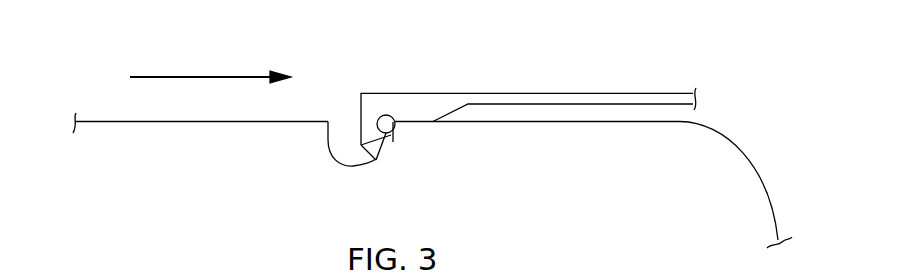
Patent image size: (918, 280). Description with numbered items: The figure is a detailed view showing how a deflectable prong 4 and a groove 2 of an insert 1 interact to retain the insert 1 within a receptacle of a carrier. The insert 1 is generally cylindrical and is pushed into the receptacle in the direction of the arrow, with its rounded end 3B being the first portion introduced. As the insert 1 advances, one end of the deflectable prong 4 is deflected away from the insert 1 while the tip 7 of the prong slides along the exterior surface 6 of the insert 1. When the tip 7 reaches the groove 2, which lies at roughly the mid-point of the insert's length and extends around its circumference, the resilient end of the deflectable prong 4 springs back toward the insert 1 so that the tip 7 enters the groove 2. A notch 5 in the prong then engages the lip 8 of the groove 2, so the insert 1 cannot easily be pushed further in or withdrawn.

The insert 1 is at (728, 132).
The groove 2 is at (341, 132).
The rounded end 3B is at (760, 170).
The deflectable prong 4 is at (445, 93).
The notch 5 is at (394, 121).
The exterior surface 6 is at (562, 121).
The tip 7 is at (377, 161).
The lip 8 is at (394, 136).